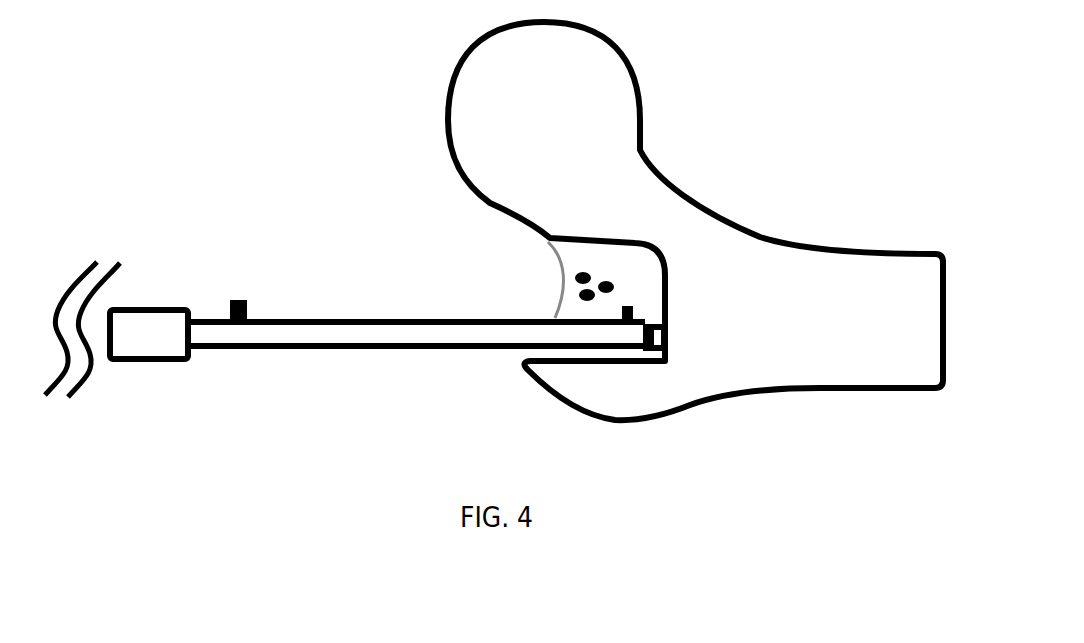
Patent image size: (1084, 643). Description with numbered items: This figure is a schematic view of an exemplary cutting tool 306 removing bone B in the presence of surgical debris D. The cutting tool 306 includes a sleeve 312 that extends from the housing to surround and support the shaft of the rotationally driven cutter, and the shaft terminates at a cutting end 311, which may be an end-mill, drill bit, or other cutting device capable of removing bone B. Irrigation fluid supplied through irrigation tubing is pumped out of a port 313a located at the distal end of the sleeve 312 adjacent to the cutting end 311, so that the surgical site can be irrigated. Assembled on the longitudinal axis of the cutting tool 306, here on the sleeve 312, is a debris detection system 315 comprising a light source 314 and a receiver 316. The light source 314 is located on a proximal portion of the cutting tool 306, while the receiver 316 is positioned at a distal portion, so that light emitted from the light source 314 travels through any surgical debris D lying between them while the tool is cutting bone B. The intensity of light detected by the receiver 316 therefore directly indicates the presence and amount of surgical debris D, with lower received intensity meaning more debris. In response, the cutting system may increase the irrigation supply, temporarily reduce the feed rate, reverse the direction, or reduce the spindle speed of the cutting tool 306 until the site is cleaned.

The bone B is at (642, 103).
The surgical debris D is at (550, 275).
The cutting tool 306 is at (273, 433).
The cutting end 311 is at (673, 343).
The sleeve 312 is at (385, 350).
The port 313a is at (647, 320).
The light source 314 is at (240, 300).
The debris detection system 315 is at (352, 212).
The receiver 316 is at (630, 306).